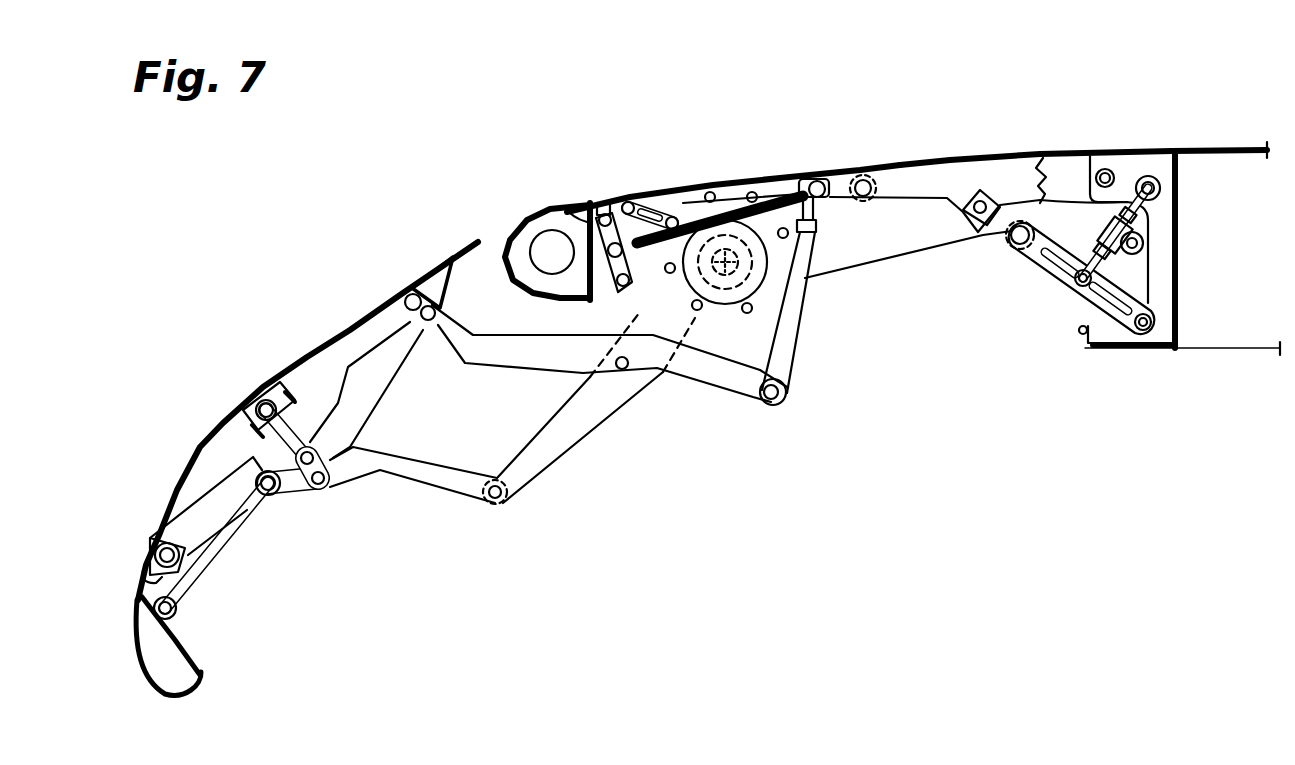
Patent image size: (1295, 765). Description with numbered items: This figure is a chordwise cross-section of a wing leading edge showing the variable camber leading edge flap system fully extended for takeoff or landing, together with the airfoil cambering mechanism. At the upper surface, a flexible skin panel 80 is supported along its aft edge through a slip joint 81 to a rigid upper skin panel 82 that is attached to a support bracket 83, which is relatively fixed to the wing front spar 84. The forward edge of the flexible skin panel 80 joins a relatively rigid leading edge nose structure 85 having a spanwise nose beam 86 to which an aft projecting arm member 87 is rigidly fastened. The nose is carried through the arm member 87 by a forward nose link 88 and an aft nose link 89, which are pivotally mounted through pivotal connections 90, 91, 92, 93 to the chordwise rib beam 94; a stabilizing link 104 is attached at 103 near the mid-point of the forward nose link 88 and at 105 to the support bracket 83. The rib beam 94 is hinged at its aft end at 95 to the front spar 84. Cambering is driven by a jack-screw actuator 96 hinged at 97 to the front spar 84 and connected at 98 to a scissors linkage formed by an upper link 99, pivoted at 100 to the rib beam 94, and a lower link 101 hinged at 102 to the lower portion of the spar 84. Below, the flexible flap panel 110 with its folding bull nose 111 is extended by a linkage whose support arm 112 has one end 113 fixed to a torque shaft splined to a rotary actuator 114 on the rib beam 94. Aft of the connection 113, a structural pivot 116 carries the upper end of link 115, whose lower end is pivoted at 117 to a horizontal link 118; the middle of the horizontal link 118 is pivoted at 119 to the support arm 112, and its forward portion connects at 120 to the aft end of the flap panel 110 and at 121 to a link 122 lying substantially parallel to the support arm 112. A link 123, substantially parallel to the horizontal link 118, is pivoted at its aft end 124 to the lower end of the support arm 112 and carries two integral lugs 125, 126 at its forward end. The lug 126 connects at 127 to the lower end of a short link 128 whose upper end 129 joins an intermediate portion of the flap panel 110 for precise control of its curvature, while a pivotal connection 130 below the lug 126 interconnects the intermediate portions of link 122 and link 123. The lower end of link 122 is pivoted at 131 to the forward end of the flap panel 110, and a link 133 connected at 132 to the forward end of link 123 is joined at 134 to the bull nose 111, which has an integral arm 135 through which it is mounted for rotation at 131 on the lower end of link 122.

The flexible skin panel 80 is at (736, 169).
The slip joint 81 is at (909, 154).
The rigid upper skin panel 82 is at (1043, 157).
The support bracket 83 is at (955, 185).
The wing front spar 84 is at (1180, 276).
The leading edge nose structure 85 is at (509, 231).
The spanwise nose beam 86 is at (575, 211).
The aft projecting arm member 87 is at (620, 198).
The forward nose link 88 is at (590, 243).
The aft nose link 89 is at (664, 205).
The pivotal connection 90 is at (604, 212).
The pivotal connection 91 is at (621, 289).
The pivotal connection 92 is at (630, 201).
The pivotal connection 93 is at (677, 217).
The chordwise rib beam 94 is at (893, 250).
The pivotal connection 95 is at (1107, 168).
The jack-screw actuator 96 is at (1095, 228).
The pivotal attachment 97 is at (1163, 187).
The pivotal connection 98 is at (1075, 287).
The upper link 99 is at (1045, 265).
The pivotal connection 100 is at (1013, 244).
The lower link 101 is at (1080, 312).
The pivotal connection 102 is at (1112, 350).
The forward attachment 103 is at (592, 298).
The stabilizing link 104 is at (749, 182).
The aft attachment 105 is at (863, 179).
The flexible flap panel 110 is at (199, 448).
The folding bull nose 111 is at (136, 666).
The support arm 112 is at (557, 453).
The end of support arm 113 is at (675, 291).
The rotary actuator 114 is at (749, 313).
The link 115 is at (791, 327).
The structural pivotal attachment point 116 is at (819, 180).
The pivotal connection 117 is at (782, 398).
The horizontal link 118 is at (700, 393).
The pivotal attachment 119 is at (600, 363).
The pivotal connection 120 is at (404, 308).
The pivotal connection 121 is at (440, 314).
The link 122 is at (380, 390).
The link 123 is at (428, 495).
The aft end pivot 124 is at (495, 505).
The lug 125 is at (297, 493).
The lug 126 is at (355, 437).
The pivotal connection 127 is at (310, 441).
The short link 128 is at (285, 405).
The upper end connection 129 is at (262, 381).
The pivotal connection 130 is at (322, 488).
The pivotal connection 131 is at (155, 553).
The connection 132 is at (268, 497).
The link 133 is at (222, 555).
The connection 134 is at (178, 612).
The arm 135 is at (140, 589).